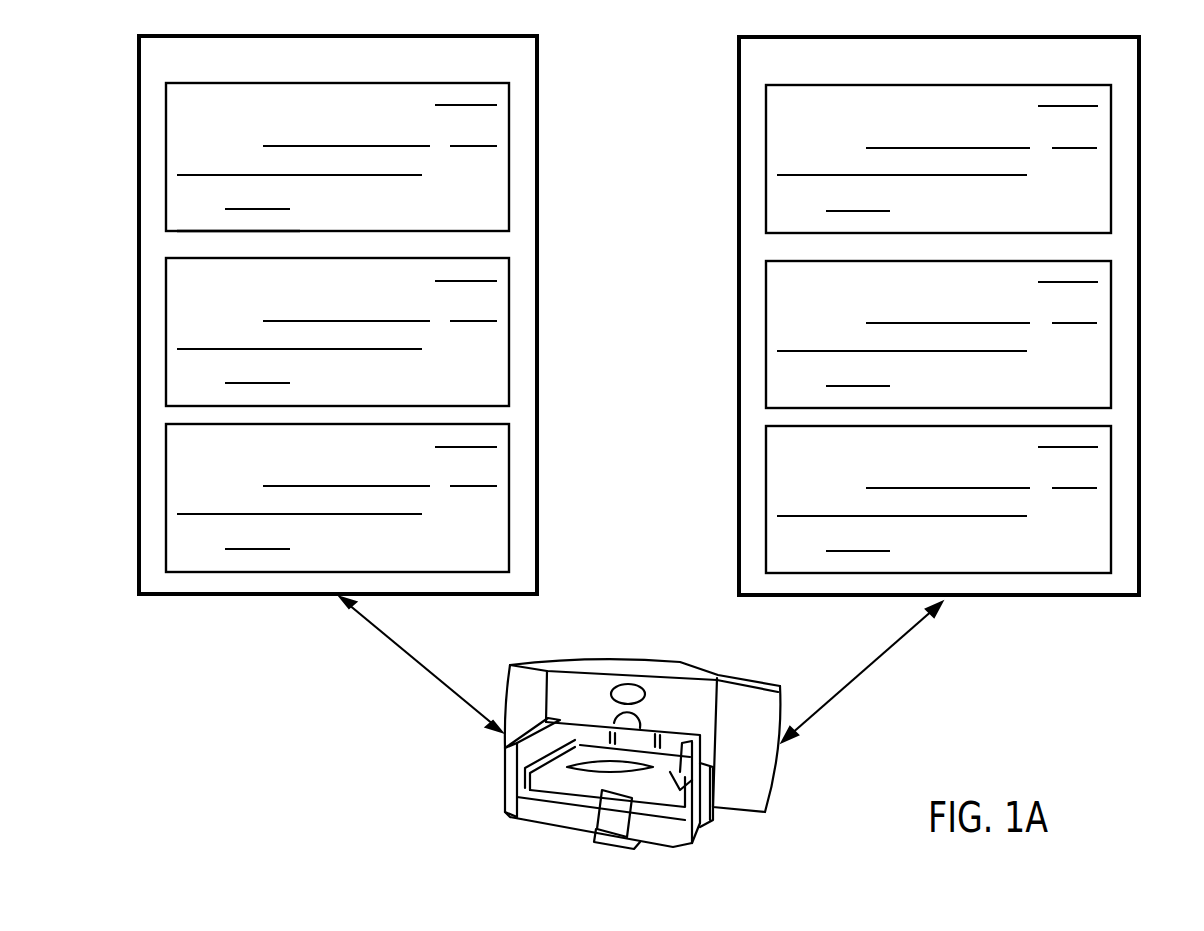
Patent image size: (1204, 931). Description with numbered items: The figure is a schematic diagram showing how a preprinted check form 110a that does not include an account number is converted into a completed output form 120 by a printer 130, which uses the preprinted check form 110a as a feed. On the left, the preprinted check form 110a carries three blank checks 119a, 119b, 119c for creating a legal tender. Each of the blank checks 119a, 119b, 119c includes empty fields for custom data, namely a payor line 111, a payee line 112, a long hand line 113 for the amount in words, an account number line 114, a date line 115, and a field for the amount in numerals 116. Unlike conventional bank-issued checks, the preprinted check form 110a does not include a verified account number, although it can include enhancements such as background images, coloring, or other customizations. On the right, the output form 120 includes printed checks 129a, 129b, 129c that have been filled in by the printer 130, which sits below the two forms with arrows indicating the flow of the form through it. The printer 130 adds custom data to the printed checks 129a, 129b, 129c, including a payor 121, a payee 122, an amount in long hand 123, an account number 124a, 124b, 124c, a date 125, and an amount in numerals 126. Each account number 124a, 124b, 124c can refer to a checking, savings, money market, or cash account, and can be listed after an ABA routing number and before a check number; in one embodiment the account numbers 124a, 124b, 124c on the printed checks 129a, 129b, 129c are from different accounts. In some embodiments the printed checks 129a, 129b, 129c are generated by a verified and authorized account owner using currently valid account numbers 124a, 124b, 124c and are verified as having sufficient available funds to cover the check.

The preprinted check form 110a is at (360, 72).
The payor line 111 is at (184, 90).
The payee line 112 is at (287, 133).
The long hand line 113 is at (267, 165).
The account number line 114 is at (220, 222).
The date line 115 is at (480, 97).
The amount in numerals 116 is at (480, 138).
The blank check 119a is at (485, 222).
The blank check 119b is at (485, 395).
The blank check 119c is at (485, 561).
The output form 120 is at (955, 74).
The payor 121 is at (779, 90).
The payee 122 is at (882, 131).
The amount in long hand 123 is at (871, 165).
The account number 124a is at (786, 223).
The account number 124b is at (784, 396).
The account number 124c is at (784, 561).
The date 125 is at (1094, 93).
The amount in numerals 126 is at (1098, 134).
The printed check 129a is at (1087, 222).
The printed check 129b is at (1087, 397).
The printed check 129c is at (1087, 563).
The printer 130 is at (641, 660).